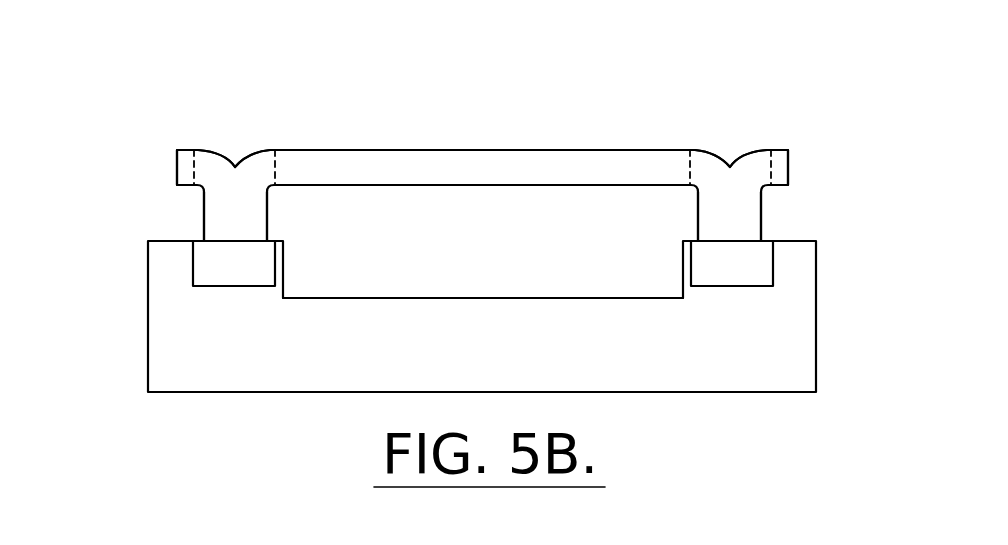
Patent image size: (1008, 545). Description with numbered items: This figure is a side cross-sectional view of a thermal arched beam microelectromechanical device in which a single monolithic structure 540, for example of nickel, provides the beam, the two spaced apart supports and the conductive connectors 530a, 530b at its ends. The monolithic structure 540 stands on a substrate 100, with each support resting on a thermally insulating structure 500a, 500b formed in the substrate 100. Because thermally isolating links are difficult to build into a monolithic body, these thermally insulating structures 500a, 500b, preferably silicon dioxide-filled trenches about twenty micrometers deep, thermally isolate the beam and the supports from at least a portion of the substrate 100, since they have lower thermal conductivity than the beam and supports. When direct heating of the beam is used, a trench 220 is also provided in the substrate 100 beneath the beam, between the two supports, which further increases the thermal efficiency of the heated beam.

The substrate 100 is at (505, 368).
The trench 220 is at (505, 283).
The thermally insulating structure 500a is at (237, 274).
The thermally insulating structure 500b is at (728, 274).
The monolithic structure 540 is at (483, 131).
The conductive connector 530a is at (175, 168).
The conductive connector 530b is at (789, 166).